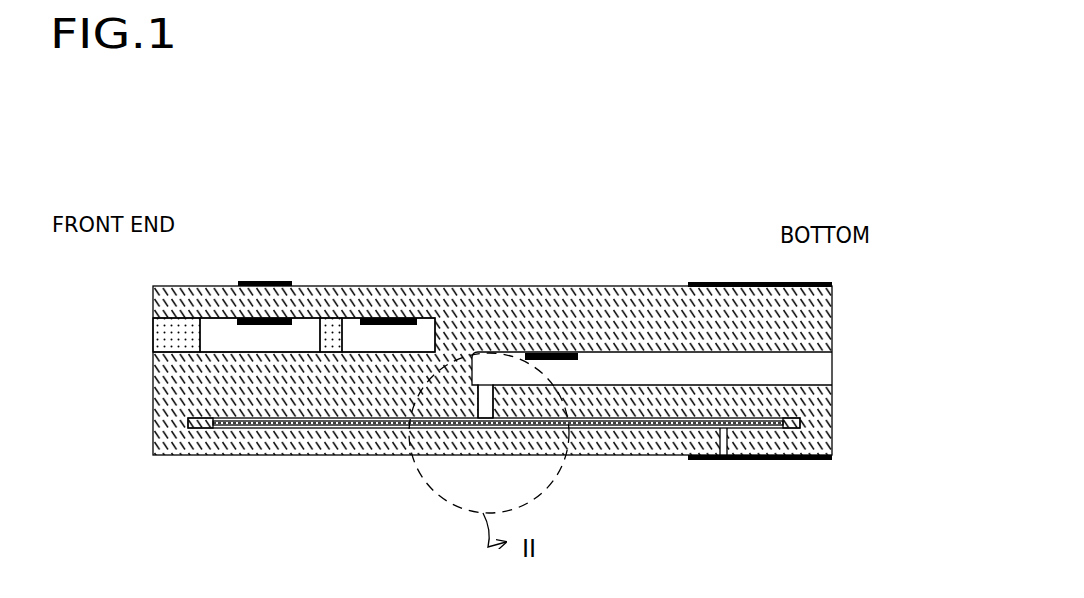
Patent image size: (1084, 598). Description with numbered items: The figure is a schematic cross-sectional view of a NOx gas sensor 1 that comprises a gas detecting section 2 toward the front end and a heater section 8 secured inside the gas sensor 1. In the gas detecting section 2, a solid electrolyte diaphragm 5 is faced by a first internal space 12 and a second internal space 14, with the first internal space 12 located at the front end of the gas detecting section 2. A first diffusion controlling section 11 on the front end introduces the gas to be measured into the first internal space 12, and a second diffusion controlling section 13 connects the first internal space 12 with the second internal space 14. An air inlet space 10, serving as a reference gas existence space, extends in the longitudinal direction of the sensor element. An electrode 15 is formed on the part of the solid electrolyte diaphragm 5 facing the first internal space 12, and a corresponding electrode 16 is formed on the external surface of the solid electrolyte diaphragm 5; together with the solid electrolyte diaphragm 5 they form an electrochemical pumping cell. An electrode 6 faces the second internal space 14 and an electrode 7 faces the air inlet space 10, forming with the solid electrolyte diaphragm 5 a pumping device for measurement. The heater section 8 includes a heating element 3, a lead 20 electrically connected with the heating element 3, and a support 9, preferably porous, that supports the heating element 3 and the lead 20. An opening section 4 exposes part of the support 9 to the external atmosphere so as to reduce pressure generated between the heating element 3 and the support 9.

The gas sensor 1 is at (510, 217).
The gas detecting section 2 is at (142, 287).
The heating element 3 is at (348, 428).
The opening section 4 is at (485, 402).
The solid electrolyte diaphragm 5 is at (505, 296).
The electrode 6 is at (395, 318).
The electrode 7 is at (550, 352).
The heater section 8 is at (250, 431).
The support 9 is at (300, 428).
The air inlet space 10 is at (818, 367).
The first diffusion controlling section 11 is at (168, 323).
The first internal space 12 is at (298, 325).
The second diffusion controlling section 13 is at (337, 320).
The second internal space 14 is at (420, 330).
The electrode 15 is at (255, 320).
The electrode 16 is at (253, 283).
The lead 20 is at (658, 428).